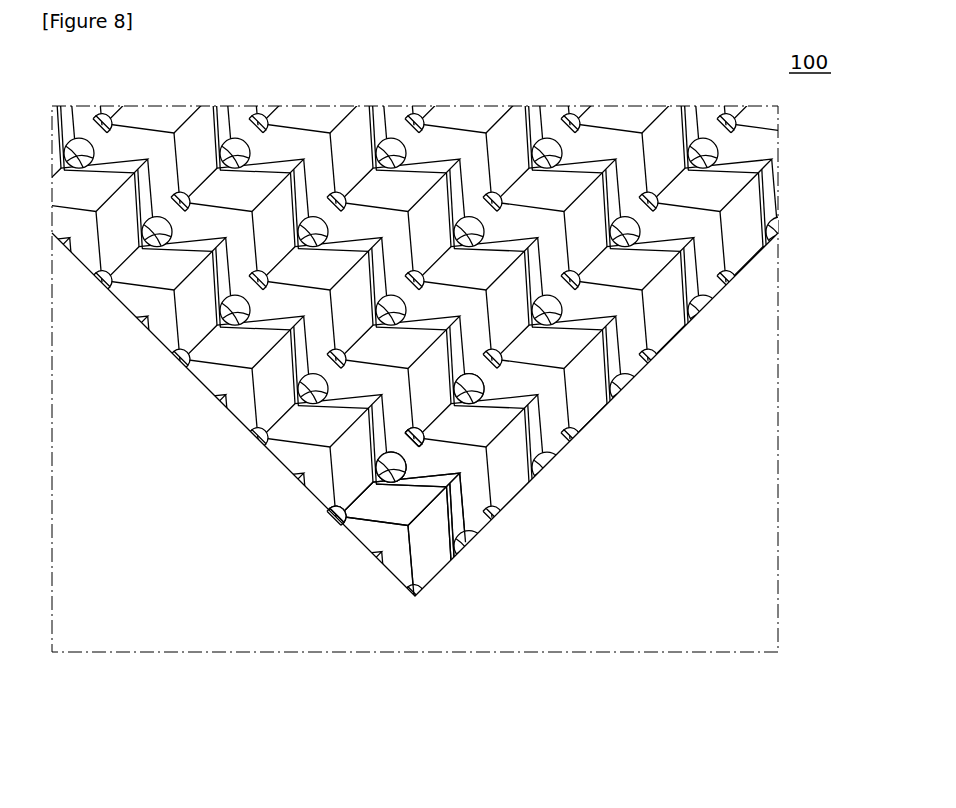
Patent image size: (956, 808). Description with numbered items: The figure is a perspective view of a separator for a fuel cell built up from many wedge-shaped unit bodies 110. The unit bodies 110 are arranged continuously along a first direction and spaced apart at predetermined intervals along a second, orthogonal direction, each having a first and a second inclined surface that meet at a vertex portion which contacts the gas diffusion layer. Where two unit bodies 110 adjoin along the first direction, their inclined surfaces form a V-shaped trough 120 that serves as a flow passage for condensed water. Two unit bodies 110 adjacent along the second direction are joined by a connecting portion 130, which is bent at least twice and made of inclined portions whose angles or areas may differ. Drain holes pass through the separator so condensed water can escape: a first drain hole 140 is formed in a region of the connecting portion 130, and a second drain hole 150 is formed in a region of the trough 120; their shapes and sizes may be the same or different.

The unit body 110 is at (433, 592).
The trough 120 is at (352, 492).
The connecting portion 130 is at (473, 508).
The first drain hole 140 is at (400, 480).
The second drain hole 150 is at (430, 434).